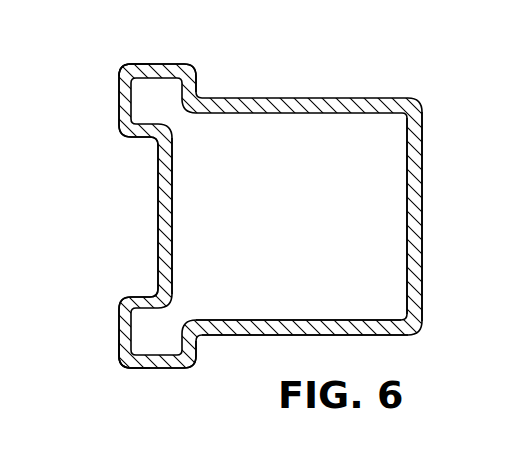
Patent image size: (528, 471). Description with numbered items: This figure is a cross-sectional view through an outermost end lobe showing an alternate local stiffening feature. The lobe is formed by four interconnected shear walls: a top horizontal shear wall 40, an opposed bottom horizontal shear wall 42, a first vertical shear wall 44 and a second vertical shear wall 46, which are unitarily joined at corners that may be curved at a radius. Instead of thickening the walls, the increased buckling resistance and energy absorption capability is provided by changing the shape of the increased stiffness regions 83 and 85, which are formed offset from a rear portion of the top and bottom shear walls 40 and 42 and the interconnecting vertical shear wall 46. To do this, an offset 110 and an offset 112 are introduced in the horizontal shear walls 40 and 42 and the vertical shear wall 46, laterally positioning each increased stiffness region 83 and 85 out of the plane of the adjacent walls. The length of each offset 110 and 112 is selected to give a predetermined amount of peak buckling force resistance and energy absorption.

The top horizontal shear wall 40 is at (277, 98).
The bottom horizontal shear wall 42 is at (232, 336).
The first vertical shear wall 44 is at (422, 214).
The second vertical shear wall 46 is at (158, 216).
The increased stiffness region 83 is at (144, 63).
The increased stiffness region 85 is at (123, 358).
The offset 110 is at (172, 66).
The offset 112 is at (162, 366).